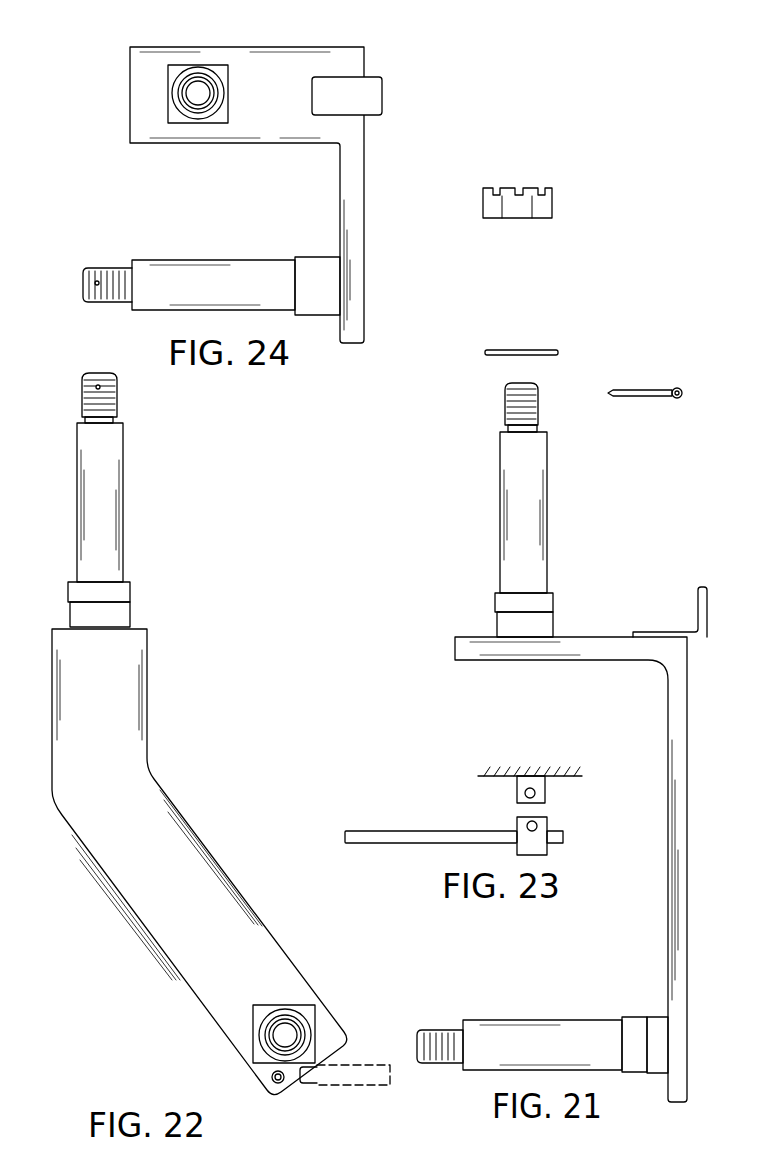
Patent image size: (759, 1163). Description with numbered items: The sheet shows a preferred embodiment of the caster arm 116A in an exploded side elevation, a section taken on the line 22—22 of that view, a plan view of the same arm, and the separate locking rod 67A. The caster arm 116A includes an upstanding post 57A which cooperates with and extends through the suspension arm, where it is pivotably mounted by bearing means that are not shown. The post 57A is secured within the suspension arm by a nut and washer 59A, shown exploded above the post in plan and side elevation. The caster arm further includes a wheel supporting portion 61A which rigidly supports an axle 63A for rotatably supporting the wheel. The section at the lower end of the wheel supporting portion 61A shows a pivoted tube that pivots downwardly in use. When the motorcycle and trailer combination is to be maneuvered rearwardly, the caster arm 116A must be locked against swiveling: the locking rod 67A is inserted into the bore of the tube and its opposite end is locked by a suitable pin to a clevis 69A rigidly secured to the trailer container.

In FIG. 24, the upstanding post 57A is at (197, 63).
In FIG. 21, the upstanding post 57A is at (510, 475).
In FIG. 22, the upstanding post 57A is at (113, 517).
In FIG. 21, the nut and washer 59A is at (562, 214).
In FIG. 24, the wheel supporting portion 61A is at (355, 210).
In FIG. 21, the wheel supporting portion 61A is at (682, 873).
In FIG. 22, the wheel supporting portion 61A is at (167, 937).
In FIG. 24, the axle 63A is at (180, 270).
In FIG. 21, the axle 63A is at (558, 1030).
In FIG. 23, the locking rod 67A is at (450, 830).
In FIG. 23, the clevis 69A is at (547, 793).
In FIG. 21, the caster arm 116A is at (470, 624).
In FIG. 22, the caster arm 116A is at (165, 712).
In FIG. 21, the section line 22— 22 is at (558, 637).